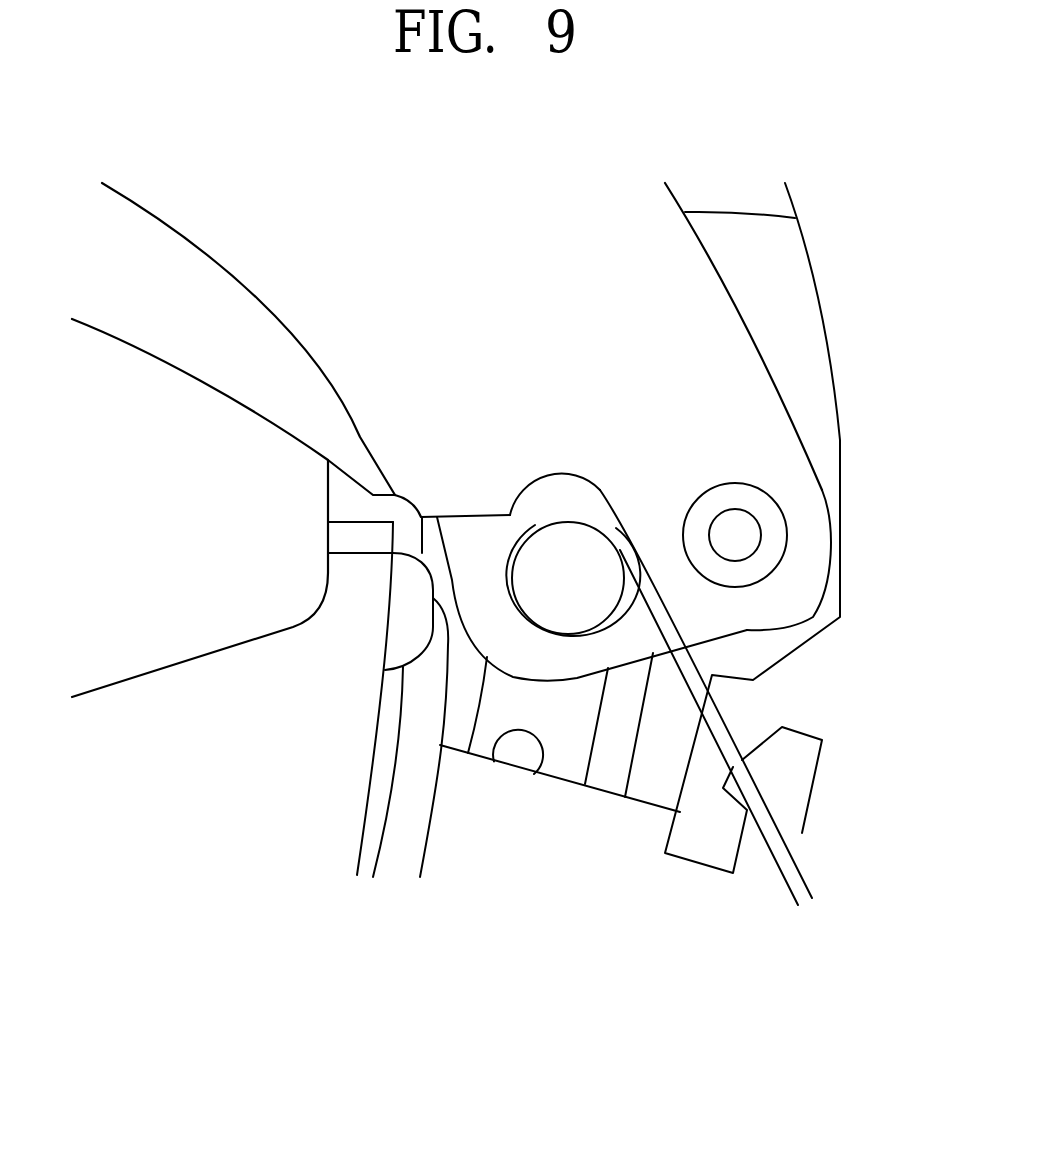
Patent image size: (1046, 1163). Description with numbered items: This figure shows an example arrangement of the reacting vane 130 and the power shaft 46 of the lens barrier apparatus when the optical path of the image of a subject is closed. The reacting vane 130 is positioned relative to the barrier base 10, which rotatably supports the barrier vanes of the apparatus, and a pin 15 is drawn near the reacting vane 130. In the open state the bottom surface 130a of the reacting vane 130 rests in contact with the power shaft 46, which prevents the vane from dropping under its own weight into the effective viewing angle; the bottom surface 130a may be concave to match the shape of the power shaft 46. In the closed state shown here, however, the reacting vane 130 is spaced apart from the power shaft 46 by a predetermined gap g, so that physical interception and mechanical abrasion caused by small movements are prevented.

The barrier base 10 is at (500, 833).
The shaft 15 is at (743, 536).
The power shaft 46 is at (576, 620).
The reacting vane 130 is at (735, 372).
The bottom surface 130a is at (563, 477).
The predetermined gap g is at (752, 902).